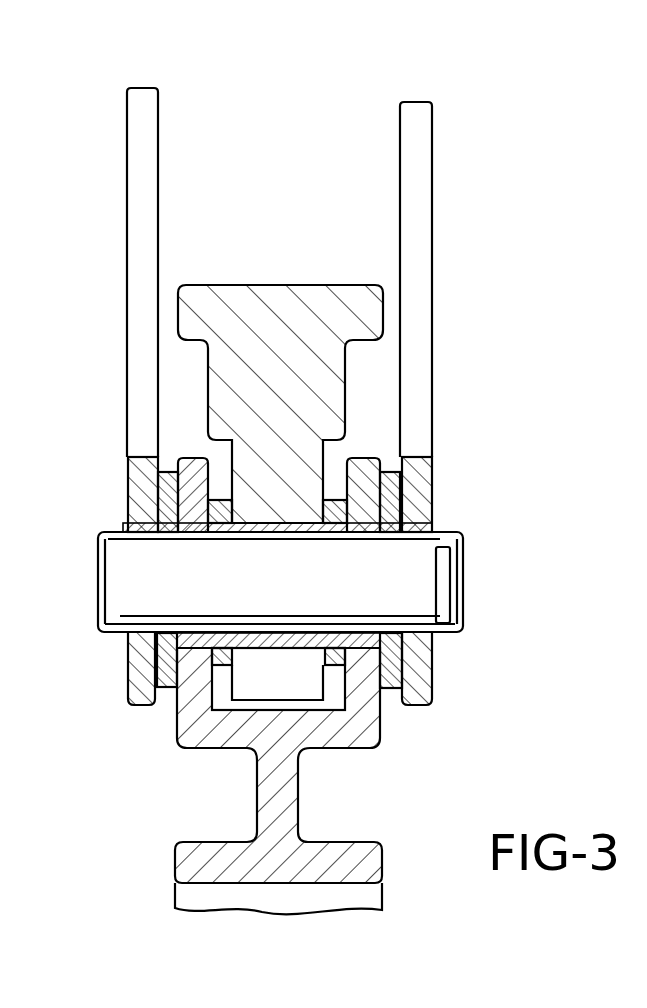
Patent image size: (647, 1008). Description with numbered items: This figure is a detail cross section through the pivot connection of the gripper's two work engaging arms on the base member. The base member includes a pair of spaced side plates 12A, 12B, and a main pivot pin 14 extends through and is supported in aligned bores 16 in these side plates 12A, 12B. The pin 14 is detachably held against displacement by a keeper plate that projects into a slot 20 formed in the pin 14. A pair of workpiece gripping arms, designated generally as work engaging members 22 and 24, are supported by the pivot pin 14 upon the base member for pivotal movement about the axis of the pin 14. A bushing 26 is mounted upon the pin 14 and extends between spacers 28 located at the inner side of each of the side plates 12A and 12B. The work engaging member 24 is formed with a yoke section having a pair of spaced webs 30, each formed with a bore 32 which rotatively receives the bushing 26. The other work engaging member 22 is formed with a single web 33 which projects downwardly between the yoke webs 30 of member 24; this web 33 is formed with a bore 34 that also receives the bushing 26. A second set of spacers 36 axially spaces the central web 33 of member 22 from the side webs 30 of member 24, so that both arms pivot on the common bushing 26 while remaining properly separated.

The side plate 12A is at (419, 233).
The side plate 12B is at (127, 229).
The main pivot pin 14 is at (445, 535).
The aligned bores 16 is at (142, 537).
The slot 20 is at (447, 590).
The work engaging member 22 is at (341, 244).
The work engaging member 24 is at (323, 762).
The bushing 26 is at (283, 535).
The spacers 28 is at (168, 470).
The spaced webs 30 is at (187, 458).
The bores 32 is at (187, 534).
The web 33 is at (185, 722).
The bore 34 is at (261, 523).
The second set of spacers 36 is at (235, 478).